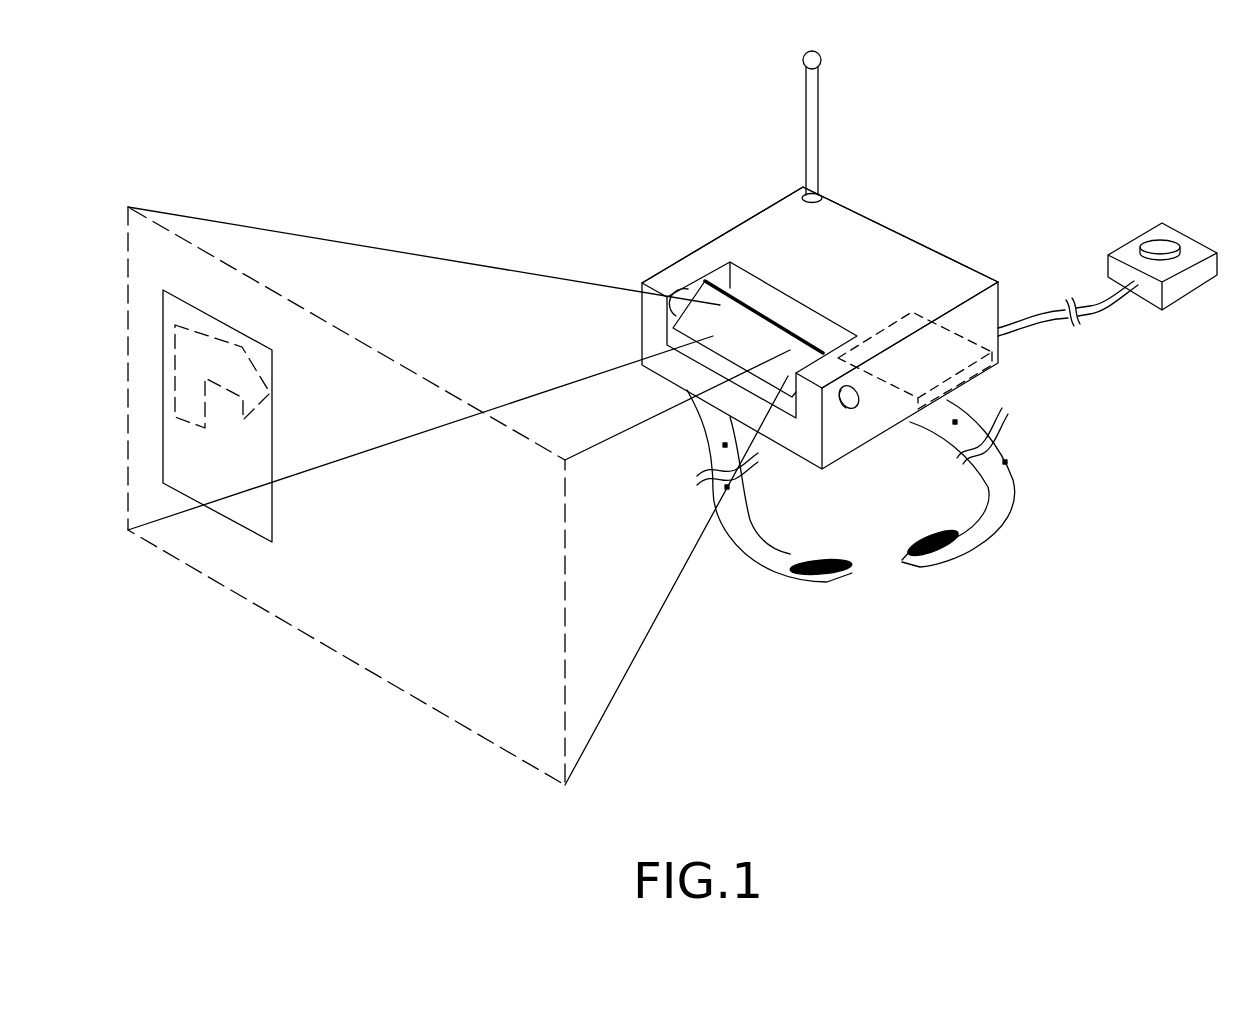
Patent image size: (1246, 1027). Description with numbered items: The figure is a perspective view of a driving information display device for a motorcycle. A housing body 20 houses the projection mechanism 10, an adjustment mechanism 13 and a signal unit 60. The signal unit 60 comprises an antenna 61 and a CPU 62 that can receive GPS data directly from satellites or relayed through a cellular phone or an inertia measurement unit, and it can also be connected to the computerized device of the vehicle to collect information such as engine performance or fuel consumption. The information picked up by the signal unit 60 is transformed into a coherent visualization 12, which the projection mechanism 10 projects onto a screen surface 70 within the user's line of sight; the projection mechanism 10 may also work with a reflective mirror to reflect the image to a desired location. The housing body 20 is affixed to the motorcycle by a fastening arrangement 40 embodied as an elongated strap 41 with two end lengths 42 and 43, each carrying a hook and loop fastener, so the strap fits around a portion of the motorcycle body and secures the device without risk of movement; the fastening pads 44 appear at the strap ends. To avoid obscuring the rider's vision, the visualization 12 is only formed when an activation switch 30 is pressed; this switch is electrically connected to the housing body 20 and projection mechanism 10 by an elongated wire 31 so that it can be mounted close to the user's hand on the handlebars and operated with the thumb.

The projection mechanism 10 is at (729, 245).
The coherent visualization 12 is at (207, 335).
The adjustment mechanism 13 is at (843, 409).
The housing body 20 is at (883, 232).
The activation switch 30 is at (1133, 255).
The elongated wire 31 is at (1097, 300).
The fastening arrangement 40 is at (926, 537).
The elongated strap 41 is at (747, 548).
The end length 42 is at (808, 577).
The end length 43 is at (928, 562).
The fastening pads 44 is at (928, 542).
The signal unit 60 is at (893, 105).
The antenna 61 is at (812, 142).
The CPU 62 is at (945, 347).
The screen surface 70 is at (345, 328).